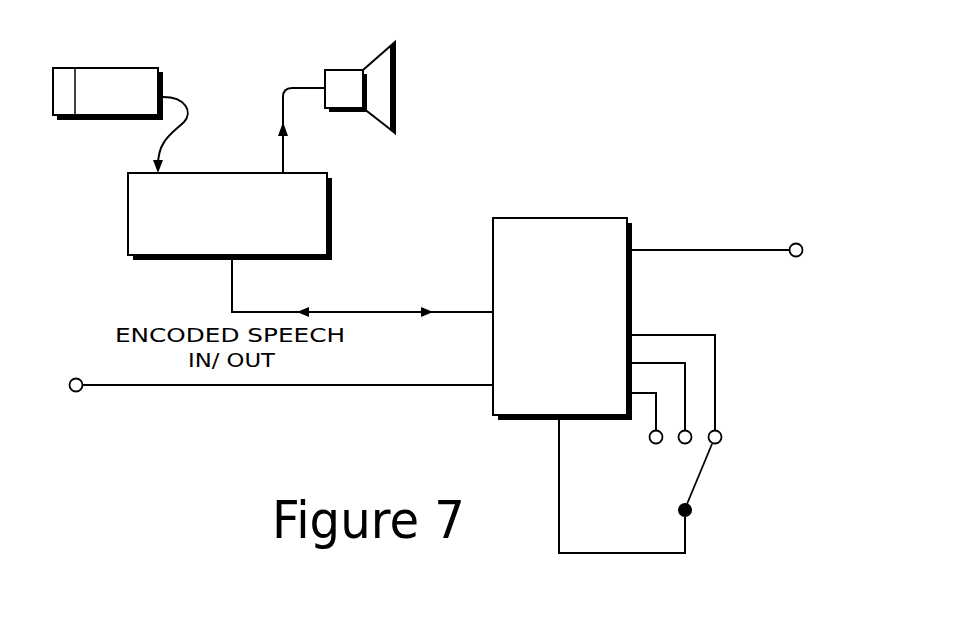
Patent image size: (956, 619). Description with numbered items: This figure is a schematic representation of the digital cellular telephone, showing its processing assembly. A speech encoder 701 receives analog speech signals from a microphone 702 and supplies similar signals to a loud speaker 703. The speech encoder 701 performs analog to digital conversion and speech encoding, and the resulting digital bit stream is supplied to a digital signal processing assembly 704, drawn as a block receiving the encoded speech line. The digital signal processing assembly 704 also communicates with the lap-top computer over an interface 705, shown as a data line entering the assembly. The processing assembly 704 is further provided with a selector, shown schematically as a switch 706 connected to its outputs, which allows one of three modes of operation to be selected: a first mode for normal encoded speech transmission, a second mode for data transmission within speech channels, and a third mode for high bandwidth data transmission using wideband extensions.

The speech encoder 701 is at (317, 207).
The microphone 702 is at (115, 78).
The loud speaker 703 is at (338, 78).
The digital signal processing assembly 704 is at (558, 232).
The interface 705 is at (355, 387).
The switch 706 is at (702, 479).